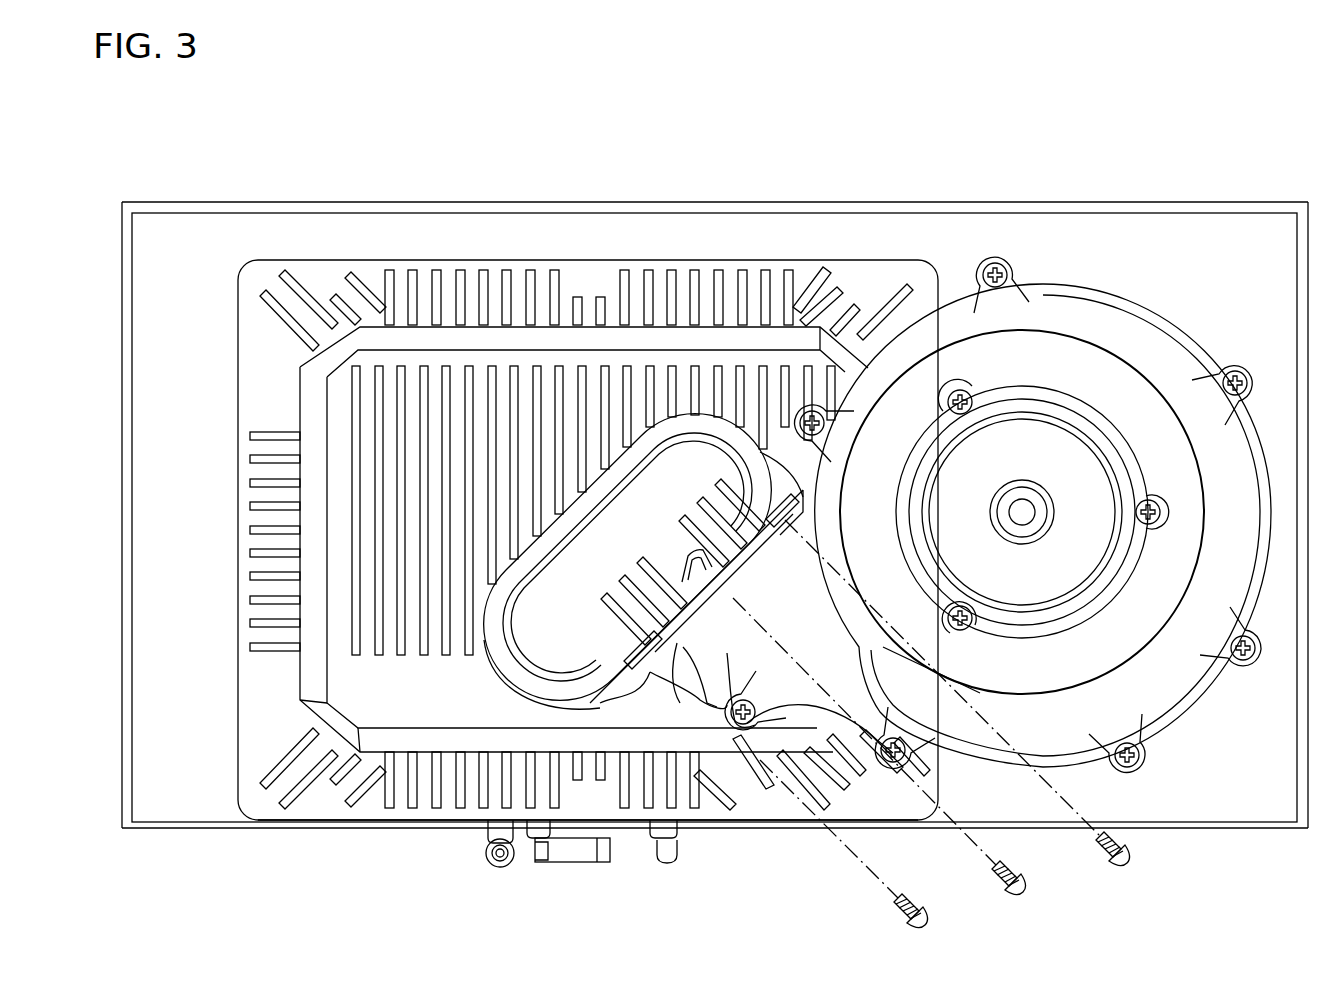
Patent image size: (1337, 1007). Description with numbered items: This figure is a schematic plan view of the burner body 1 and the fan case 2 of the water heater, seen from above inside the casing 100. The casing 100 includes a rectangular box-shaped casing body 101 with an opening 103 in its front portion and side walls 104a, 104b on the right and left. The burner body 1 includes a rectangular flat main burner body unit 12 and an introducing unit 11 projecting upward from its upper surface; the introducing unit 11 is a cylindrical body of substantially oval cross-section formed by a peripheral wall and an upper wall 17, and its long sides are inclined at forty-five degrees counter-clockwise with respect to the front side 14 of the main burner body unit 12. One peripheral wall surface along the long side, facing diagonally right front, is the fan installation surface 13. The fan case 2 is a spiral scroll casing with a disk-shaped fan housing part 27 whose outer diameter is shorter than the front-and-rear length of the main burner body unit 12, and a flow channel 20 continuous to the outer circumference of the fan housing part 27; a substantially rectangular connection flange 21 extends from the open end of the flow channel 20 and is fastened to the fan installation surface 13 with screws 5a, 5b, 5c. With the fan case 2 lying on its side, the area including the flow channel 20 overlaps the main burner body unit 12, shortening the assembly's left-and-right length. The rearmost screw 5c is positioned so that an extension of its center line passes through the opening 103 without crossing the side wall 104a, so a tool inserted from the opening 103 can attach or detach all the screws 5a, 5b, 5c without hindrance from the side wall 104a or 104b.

The burner body 1 is at (507, 169).
The fan case 2 is at (1033, 459).
The screw 5a is at (1000, 881).
The screw 5b is at (905, 917).
The screw 5c is at (1113, 857).
The introducing unit 11 is at (583, 493).
The main burner body unit 12 is at (402, 268).
The fan installation surface 13 is at (712, 655).
The front side 14 is at (305, 828).
The upper wall 17 is at (540, 633).
The flow channel 20 is at (803, 697).
The connection flange 21 is at (707, 705).
The fan housing part 27 is at (1060, 305).
The casing 100 is at (1308, 235).
The casing body 101 is at (728, 484).
The opening 103 is at (1205, 830).
The side wall 104a is at (1308, 806).
The side wall 104b is at (122, 232).